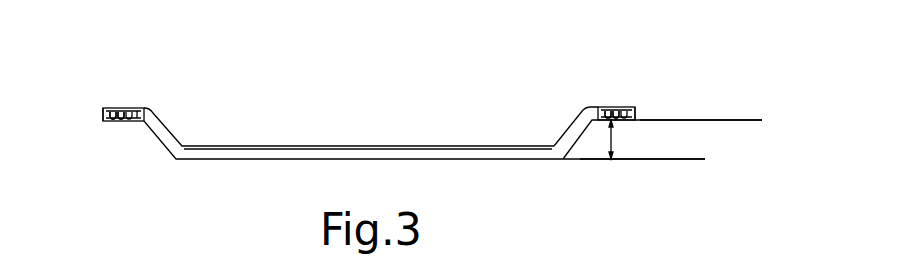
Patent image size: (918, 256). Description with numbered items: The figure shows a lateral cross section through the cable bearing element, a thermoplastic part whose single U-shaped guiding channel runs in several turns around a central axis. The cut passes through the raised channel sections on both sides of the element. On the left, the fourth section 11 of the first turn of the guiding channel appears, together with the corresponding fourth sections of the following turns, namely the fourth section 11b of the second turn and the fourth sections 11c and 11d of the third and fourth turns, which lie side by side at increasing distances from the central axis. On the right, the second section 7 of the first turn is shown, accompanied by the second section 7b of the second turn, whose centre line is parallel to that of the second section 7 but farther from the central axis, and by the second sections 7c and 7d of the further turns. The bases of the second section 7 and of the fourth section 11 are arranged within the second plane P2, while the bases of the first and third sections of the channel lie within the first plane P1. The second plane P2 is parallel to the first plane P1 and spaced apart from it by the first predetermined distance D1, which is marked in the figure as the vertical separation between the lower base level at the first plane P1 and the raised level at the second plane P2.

The fourth section 11 is at (143, 108).
The fourth section of the second turn 11b is at (126, 110).
The fourth section of the third turn 11c is at (117, 110).
The fourth section of the fourth turn 11d is at (103, 109).
The second section 7 is at (605, 107).
The second section of the second turn 7b is at (612, 107).
The second section of the third turn 7c is at (622, 107).
The second section of the fourth turn 7d is at (633, 107).
The first plane P1 is at (673, 160).
The second plane P2 is at (732, 119).
The first predetermined distance D1 is at (630, 138).